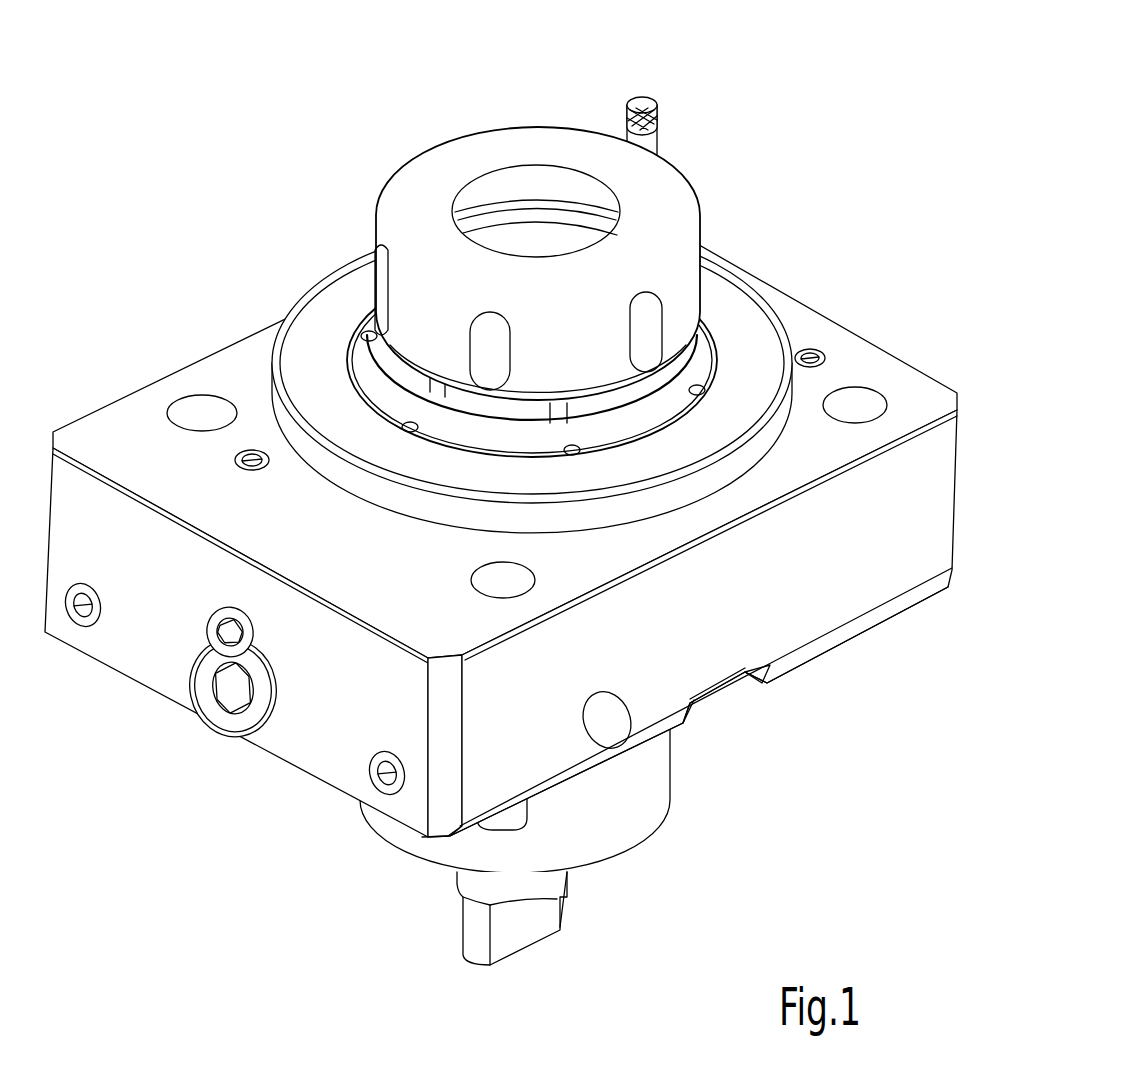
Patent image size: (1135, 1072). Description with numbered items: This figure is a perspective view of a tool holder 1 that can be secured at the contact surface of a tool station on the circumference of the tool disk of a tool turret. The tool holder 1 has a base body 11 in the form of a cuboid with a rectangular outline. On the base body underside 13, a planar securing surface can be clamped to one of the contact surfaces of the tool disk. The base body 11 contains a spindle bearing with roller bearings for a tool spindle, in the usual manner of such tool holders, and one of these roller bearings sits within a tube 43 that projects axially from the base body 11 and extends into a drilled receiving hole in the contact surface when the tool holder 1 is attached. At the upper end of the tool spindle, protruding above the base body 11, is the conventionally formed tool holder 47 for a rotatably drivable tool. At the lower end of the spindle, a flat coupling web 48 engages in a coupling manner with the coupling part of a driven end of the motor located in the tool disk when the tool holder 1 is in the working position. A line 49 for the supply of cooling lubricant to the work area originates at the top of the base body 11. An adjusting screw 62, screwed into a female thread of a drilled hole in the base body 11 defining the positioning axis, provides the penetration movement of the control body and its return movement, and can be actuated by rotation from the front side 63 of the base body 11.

The tool holder 1 is at (501, 517).
The base body 11 is at (501, 527).
The base body underside 13 is at (850, 640).
The tube 43 is at (549, 851).
The tool holder 47 is at (658, 253).
The coupling web 48 is at (520, 935).
The line 49 is at (650, 138).
The adjusting screw 62 is at (227, 710).
The front side 63 is at (142, 635).